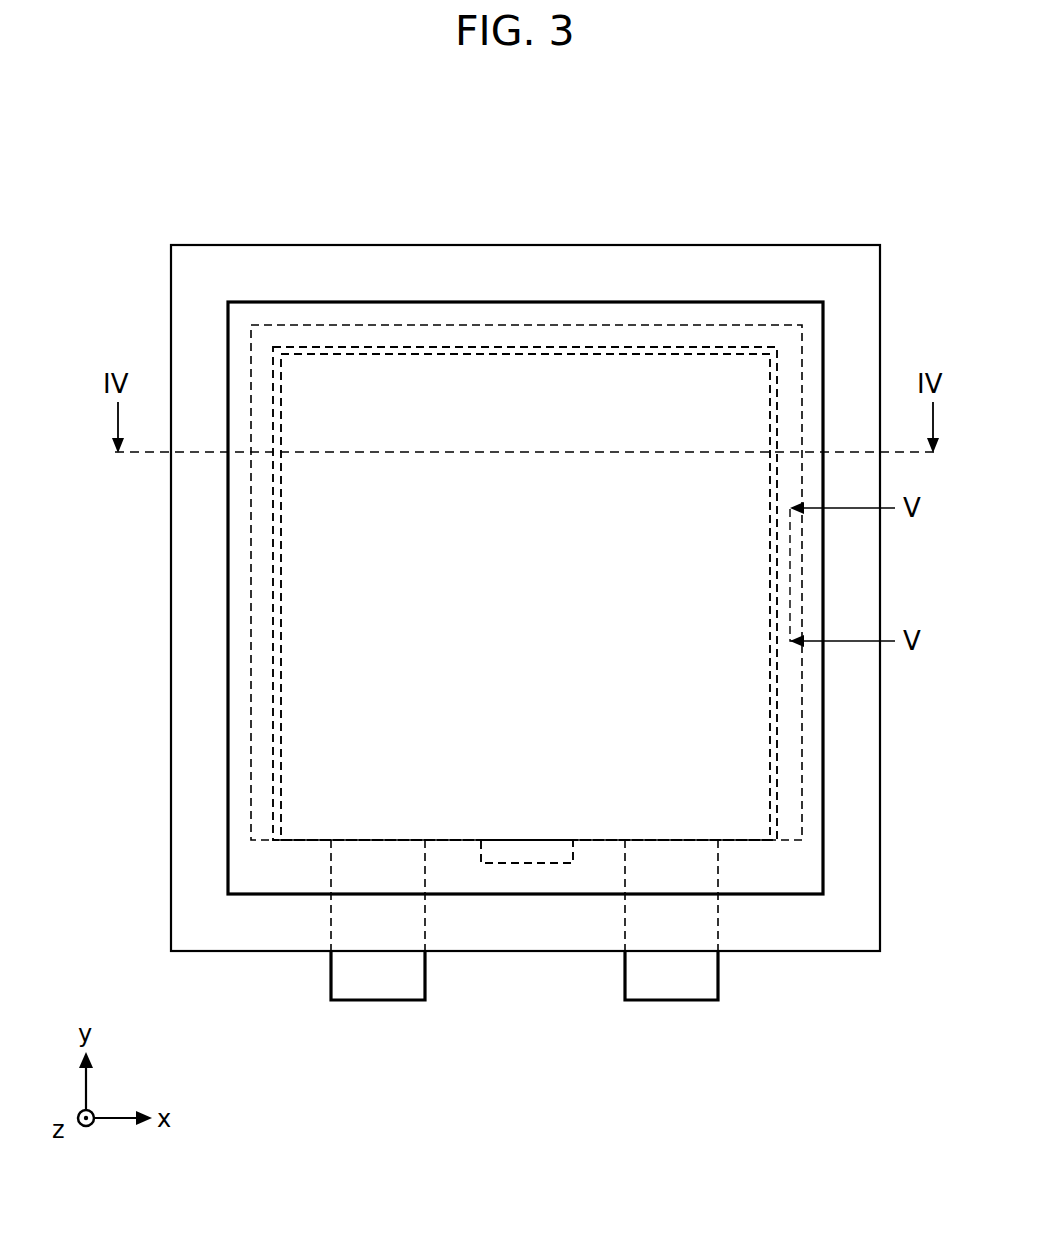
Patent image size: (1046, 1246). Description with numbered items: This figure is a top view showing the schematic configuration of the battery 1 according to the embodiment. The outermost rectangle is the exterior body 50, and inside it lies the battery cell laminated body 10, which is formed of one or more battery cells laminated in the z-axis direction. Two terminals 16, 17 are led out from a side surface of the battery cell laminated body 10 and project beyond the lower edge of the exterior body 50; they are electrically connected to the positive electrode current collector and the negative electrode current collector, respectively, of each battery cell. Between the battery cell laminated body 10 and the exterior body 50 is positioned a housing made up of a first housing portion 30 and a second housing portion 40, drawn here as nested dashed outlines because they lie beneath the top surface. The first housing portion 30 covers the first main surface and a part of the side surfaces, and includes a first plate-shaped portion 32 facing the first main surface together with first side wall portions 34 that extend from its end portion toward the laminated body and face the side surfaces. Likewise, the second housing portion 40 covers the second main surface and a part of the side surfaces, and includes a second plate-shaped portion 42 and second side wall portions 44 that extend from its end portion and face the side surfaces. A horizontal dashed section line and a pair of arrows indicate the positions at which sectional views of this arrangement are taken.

The battery 1 is at (146, 158).
The battery cell laminated body 10 is at (340, 353).
The terminal 16 is at (378, 1000).
The terminal 17 is at (670, 1000).
The first housing portion 30 is at (526, 506).
The second housing portion 40 is at (384, 325).
The first plate-shaped portion 32 is at (532, 506).
The second plate-shaped portion 42 is at (663, 403).
The first side wall portions 34 is at (689, 598).
The second side wall portions 44 is at (787, 388).
The exterior body 50 is at (600, 245).